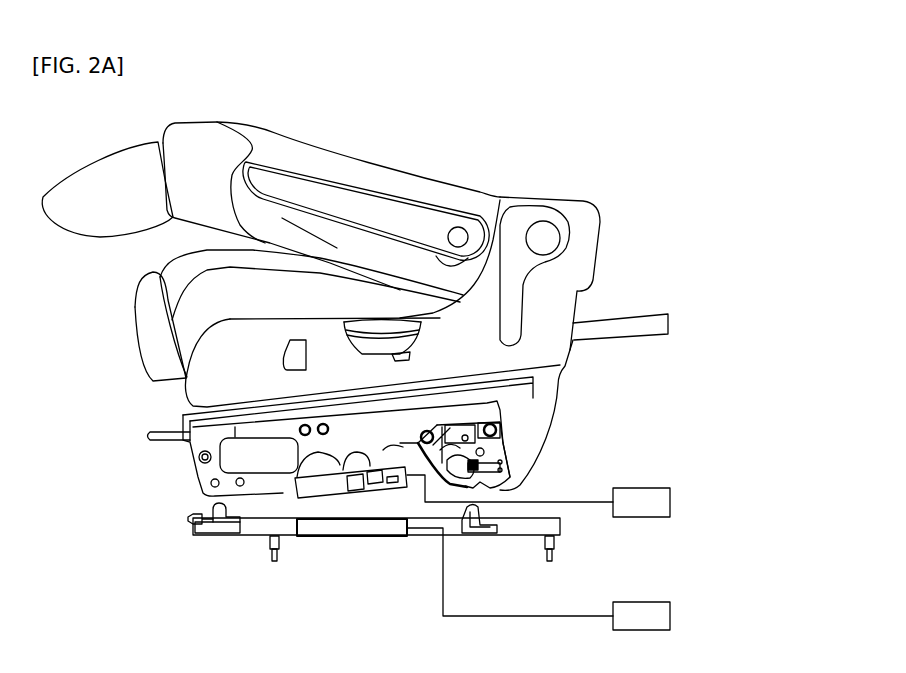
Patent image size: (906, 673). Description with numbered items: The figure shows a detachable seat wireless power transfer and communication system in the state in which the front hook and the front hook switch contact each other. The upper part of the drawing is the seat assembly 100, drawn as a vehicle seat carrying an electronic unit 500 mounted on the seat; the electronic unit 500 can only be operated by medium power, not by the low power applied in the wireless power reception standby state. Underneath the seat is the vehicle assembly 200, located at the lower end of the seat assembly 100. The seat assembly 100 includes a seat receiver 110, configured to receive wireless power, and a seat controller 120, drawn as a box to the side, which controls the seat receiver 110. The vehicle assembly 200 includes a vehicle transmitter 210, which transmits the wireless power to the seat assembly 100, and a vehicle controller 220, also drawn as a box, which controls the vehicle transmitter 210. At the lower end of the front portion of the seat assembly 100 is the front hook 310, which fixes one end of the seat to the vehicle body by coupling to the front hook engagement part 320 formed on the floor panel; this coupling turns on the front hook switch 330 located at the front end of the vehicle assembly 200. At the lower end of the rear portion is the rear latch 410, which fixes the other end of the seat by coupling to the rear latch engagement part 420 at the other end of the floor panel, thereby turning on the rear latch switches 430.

The electronic unit 500 is at (407, 180).
The seat assembly 100 is at (291, 487).
The seat receiver 110 is at (372, 477).
The seat controller 120 is at (672, 502).
The vehicle assembly 200 is at (323, 537).
The vehicle transmitter 210 is at (380, 538).
The vehicle controller 220 is at (672, 614).
The front hook 310 is at (203, 495).
The front hook engagement part 320 is at (228, 530).
The front hook switch 330 is at (188, 519).
The rear latch 410 is at (500, 490).
The rear latch engagement part 420 is at (484, 537).
The rear latch switches 430 is at (503, 440).